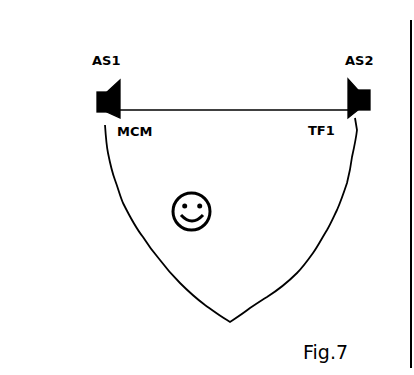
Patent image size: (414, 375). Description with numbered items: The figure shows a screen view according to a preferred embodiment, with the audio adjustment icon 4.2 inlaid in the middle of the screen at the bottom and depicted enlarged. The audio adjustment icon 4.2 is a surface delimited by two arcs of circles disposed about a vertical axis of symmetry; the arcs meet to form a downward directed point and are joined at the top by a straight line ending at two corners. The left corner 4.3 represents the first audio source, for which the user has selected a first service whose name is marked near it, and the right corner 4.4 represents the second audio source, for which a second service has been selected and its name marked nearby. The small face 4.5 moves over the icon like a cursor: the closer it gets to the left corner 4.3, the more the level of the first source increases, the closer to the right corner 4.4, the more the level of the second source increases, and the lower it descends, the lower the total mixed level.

The audio adjustment icon 4.2 is at (231, 220).
The left corner 4.3 is at (123, 99).
The right corner 4.4 is at (370, 100).
The small face 4.5 is at (210, 211).